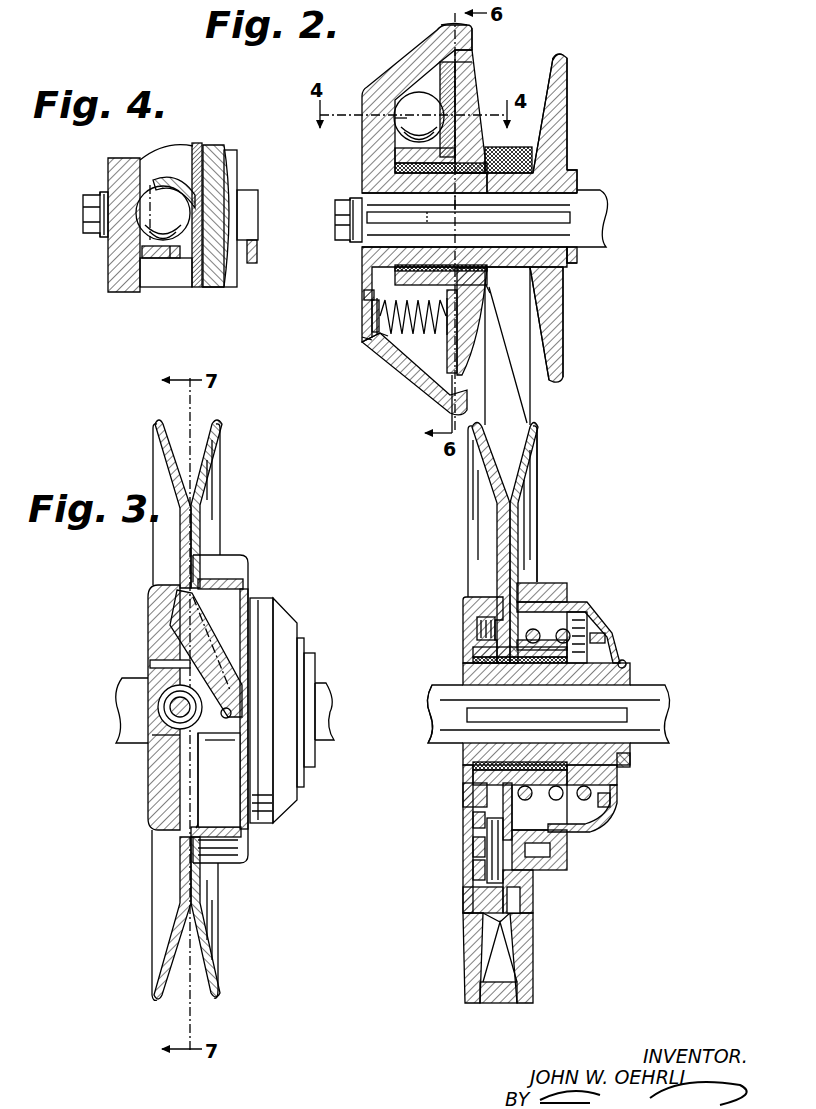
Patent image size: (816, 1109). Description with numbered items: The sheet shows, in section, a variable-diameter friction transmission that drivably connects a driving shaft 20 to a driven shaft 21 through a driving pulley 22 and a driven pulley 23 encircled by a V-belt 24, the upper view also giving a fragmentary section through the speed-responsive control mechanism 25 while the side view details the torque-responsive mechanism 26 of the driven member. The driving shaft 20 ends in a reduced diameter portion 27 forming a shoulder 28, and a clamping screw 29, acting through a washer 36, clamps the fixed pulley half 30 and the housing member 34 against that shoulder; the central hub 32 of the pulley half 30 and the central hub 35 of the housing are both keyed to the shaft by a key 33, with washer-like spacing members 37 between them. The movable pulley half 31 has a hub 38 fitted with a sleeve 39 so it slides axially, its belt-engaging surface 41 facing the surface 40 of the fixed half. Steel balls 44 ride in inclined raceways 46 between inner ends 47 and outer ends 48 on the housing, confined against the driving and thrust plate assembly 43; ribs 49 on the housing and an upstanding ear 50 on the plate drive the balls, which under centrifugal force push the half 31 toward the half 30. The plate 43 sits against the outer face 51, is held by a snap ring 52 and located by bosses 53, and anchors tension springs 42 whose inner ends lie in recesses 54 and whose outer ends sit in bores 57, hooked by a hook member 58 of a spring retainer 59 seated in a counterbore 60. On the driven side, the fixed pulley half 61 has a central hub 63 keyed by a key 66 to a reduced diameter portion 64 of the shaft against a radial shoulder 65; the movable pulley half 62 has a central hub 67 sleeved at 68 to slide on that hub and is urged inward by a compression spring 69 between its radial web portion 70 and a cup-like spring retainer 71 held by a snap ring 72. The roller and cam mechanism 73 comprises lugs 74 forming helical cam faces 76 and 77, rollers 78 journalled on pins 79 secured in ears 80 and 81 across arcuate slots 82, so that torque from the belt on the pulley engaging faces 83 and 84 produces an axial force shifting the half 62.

In FIG. 2, the driving shaft 20 is at (603, 198).
In FIG. 4, the driving shaft 20 is at (259, 207).
In FIG. 2, the driven shaft 21 is at (443, 727).
In FIG. 2, the driving pulley 22 is at (585, 92).
In FIG. 2, the driven pulley 23 is at (565, 482).
In FIG. 2, the belt 24 is at (532, 408).
In FIG. 2, the speed-responsive control mechanism 25 is at (410, 41).
In FIG. 2, the torque-responsive mechanism 26 is at (612, 593).
In FIG. 2, the reduced diameter portion 27 is at (580, 178).
In FIG. 2, the shoulder 28 is at (576, 260).
In FIG. 2, the clamping screw 29 is at (352, 247).
In FIG. 4, the clamping screw 29 is at (95, 234).
In FIG. 2, the pulley half 30 is at (568, 140).
In FIG. 2, the pulley half 31 is at (462, 50).
In FIG. 4, the pulley half 31 is at (200, 170).
In FIG. 2, the central hub 32 is at (505, 270).
In FIG. 4, the central hub 32 is at (240, 172).
In FIG. 2, the key 33 is at (468, 207).
In FIG. 2, the housing member 34 is at (395, 166).
In FIG. 4, the housing member 34 is at (110, 280).
In FIG. 2, the central hub 35 is at (396, 278).
In FIG. 2, the washer 36 is at (360, 192).
In FIG. 4, the washer 36 is at (106, 181).
In FIG. 2, the spacing members 37 is at (470, 203).
In FIG. 2, the hub 38 is at (395, 152).
In FIG. 2, the sleeve 39 is at (484, 292).
In FIG. 2, the belt-engaging surface 40 is at (565, 52).
In FIG. 2, the belt-engaging surface 41 is at (482, 96).
In FIG. 2, the tension springs 42 is at (418, 355).
In FIG. 2, the driving and thrust plate assembly 43 is at (450, 28).
In FIG. 2, the steel balls 44 is at (405, 100).
In FIG. 4, the steel balls 44 is at (150, 192).
In FIG. 4, the raceways 46 is at (160, 258).
In FIG. 2, the inner ends 47 is at (396, 119).
In FIG. 2, the outer ends 48 is at (474, 36).
In FIG. 4, the ribs 49 is at (175, 258).
In FIG. 4, the upstanding ear 50 is at (175, 180).
In FIG. 2, the outer face 51 is at (497, 147).
In FIG. 4, the outer face 51 is at (214, 270).
In FIG. 2, the snap ring 52 is at (412, 308).
In FIG. 2, the bosses 53 is at (466, 76).
In FIG. 2, the recess 54 is at (465, 335).
In FIG. 2, the bores 57 is at (372, 315).
In FIG. 2, the hook member 58 is at (383, 337).
In FIG. 2, the spring retainer 59 is at (364, 338).
In FIG. 2, the counterbore 60 is at (368, 300).
In FIG. 2, the fixed pulley half 61 is at (477, 547).
In FIG. 3, the fixed pulley half 61 is at (160, 952).
In FIG. 2, the movable pulley half 62 is at (538, 533).
In FIG. 3, the movable pulley half 62 is at (218, 958).
In FIG. 2, the central hub 63 is at (632, 758).
In FIG. 3, the central hub 63 is at (316, 675).
In FIG. 2, the reduced diameter portion 64 is at (668, 697).
In FIG. 3, the reduced diameter portion 64 is at (334, 728).
In FIG. 2, the radial shoulder 65 is at (470, 766).
In FIG. 2, the key 66 is at (618, 712).
In FIG. 2, the central hub 67 is at (478, 648).
In FIG. 2, the sleeve 68 is at (475, 663).
In FIG. 2, the compression spring 69 is at (606, 816).
In FIG. 2, the radial web portion 70 is at (535, 600).
In FIG. 2, the spring retainer 71 is at (612, 632).
In FIG. 3, the spring retainer 71 is at (292, 618).
In FIG. 2, the snap ring 72 is at (626, 662).
In FIG. 3, the snap ring 72 is at (304, 648).
In FIG. 3, the roller and cam mechanism 73 is at (210, 742).
In FIG. 3, the lugs 74 is at (215, 635).
In FIG. 3, the cam face 76 is at (232, 715).
In FIG. 3, the cam face 77 is at (200, 762).
In FIG. 2, the rollers 78 is at (473, 852).
In FIG. 3, the rollers 78 is at (156, 705).
In FIG. 2, the pins 79 is at (477, 883).
In FIG. 3, the pins 79 is at (160, 750).
In FIG. 2, the ear 80 is at (473, 826).
In FIG. 2, the ear 81 is at (463, 910).
In FIG. 2, the arcuate slots 82 is at (545, 857).
In FIG. 2, the pulley engaging face 83 is at (485, 472).
In FIG. 3, the pulley engaging face 83 is at (176, 460).
In FIG. 2, the pulley engaging face 84 is at (530, 450).
In FIG. 3, the pulley engaging face 84 is at (201, 478).